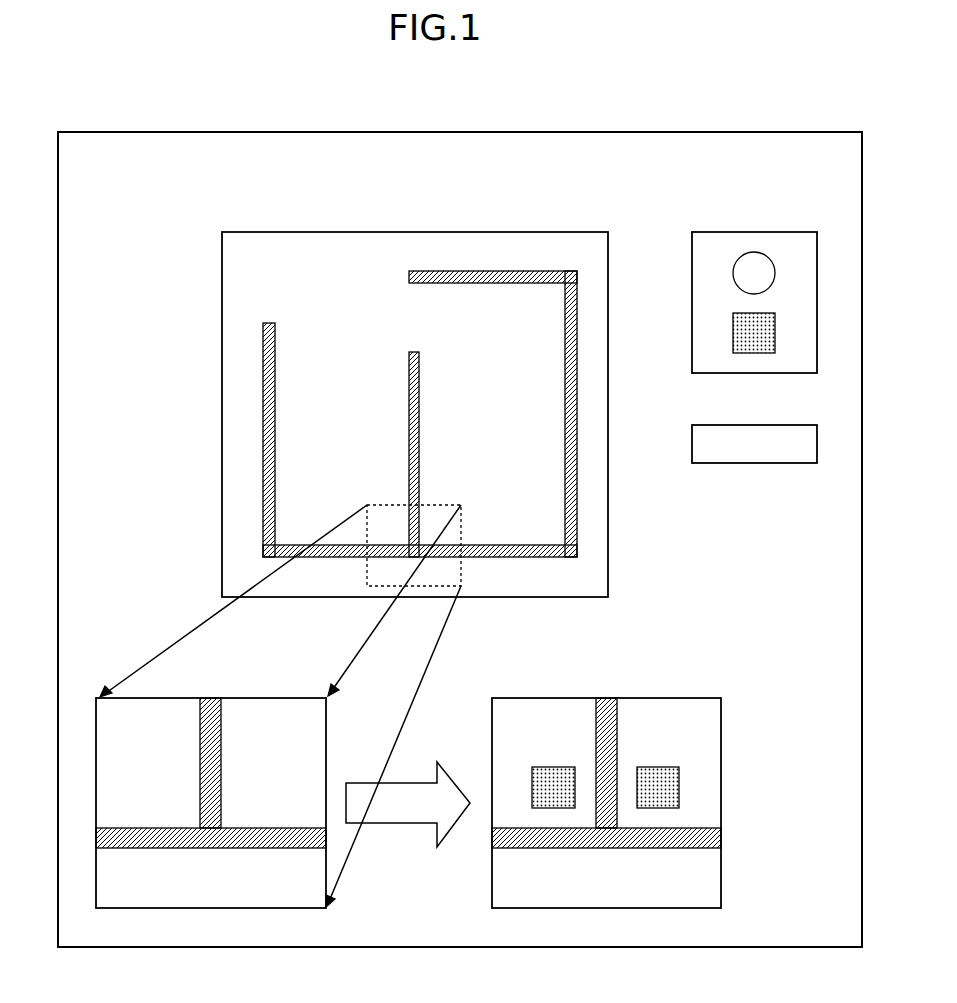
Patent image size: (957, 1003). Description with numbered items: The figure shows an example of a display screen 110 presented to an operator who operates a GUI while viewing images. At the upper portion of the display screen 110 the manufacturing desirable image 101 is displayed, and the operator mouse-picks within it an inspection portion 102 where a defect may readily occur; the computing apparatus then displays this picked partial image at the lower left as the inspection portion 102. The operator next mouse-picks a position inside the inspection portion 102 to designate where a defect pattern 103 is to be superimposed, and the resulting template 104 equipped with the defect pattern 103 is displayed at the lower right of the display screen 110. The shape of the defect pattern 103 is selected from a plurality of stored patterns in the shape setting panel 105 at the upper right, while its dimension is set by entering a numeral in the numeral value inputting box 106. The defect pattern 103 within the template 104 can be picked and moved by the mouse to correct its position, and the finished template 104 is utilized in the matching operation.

The display screen 110 is at (462, 132).
The manufacturing desirable image 101 is at (412, 232).
The inspection portion 102 is at (257, 698).
The defect pattern 103 is at (679, 785).
The template 104 is at (652, 698).
The shape setting panel 105 is at (752, 232).
The numeral value inputting box 106 is at (752, 463).